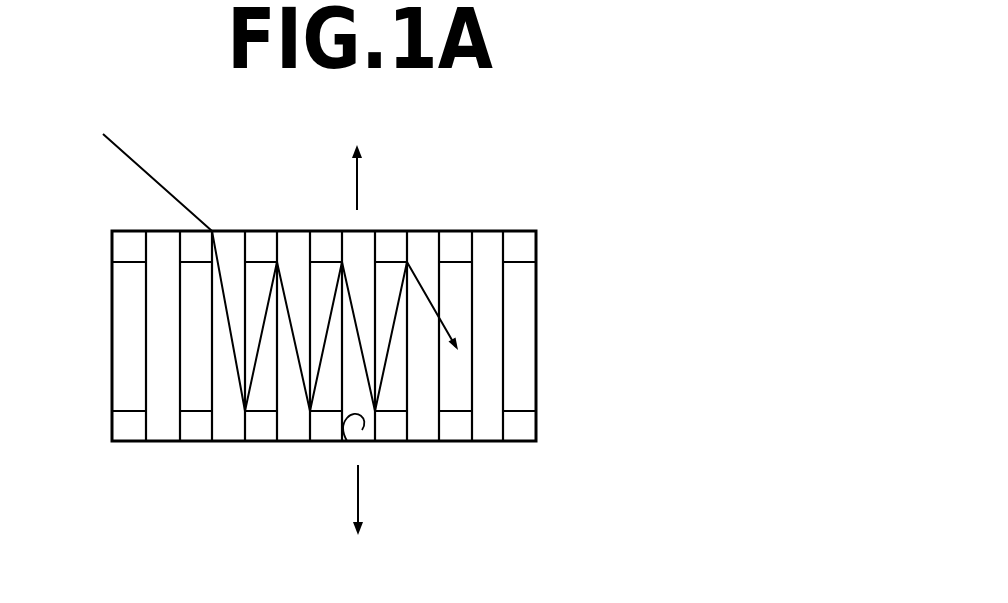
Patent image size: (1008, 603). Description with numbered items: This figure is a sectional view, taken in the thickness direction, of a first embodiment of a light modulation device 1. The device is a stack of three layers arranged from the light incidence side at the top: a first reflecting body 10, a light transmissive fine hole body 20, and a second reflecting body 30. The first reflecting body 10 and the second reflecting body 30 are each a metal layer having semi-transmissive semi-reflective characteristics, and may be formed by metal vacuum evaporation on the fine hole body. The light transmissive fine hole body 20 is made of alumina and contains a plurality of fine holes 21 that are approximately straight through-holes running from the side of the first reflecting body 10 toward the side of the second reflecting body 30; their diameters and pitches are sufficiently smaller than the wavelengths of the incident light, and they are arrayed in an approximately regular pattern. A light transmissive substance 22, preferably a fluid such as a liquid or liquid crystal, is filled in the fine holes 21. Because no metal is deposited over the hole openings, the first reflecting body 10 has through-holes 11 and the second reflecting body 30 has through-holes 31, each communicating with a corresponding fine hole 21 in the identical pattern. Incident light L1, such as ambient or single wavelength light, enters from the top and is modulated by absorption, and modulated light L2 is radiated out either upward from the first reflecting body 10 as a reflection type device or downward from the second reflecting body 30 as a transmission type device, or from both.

The light modulation device 1 is at (615, 237).
The first reflecting body 10 is at (528, 247).
The through-holes 11 is at (472, 248).
The light transmissive fine hole body 20 is at (528, 338).
The fine holes 21 is at (147, 387).
The light transmissive substance 22 is at (158, 342).
The second reflecting body 30 is at (528, 428).
The through-holes 31 is at (362, 430).
The incident light L1 is at (269, 257).
The modulated light L2 is at (355, 339).